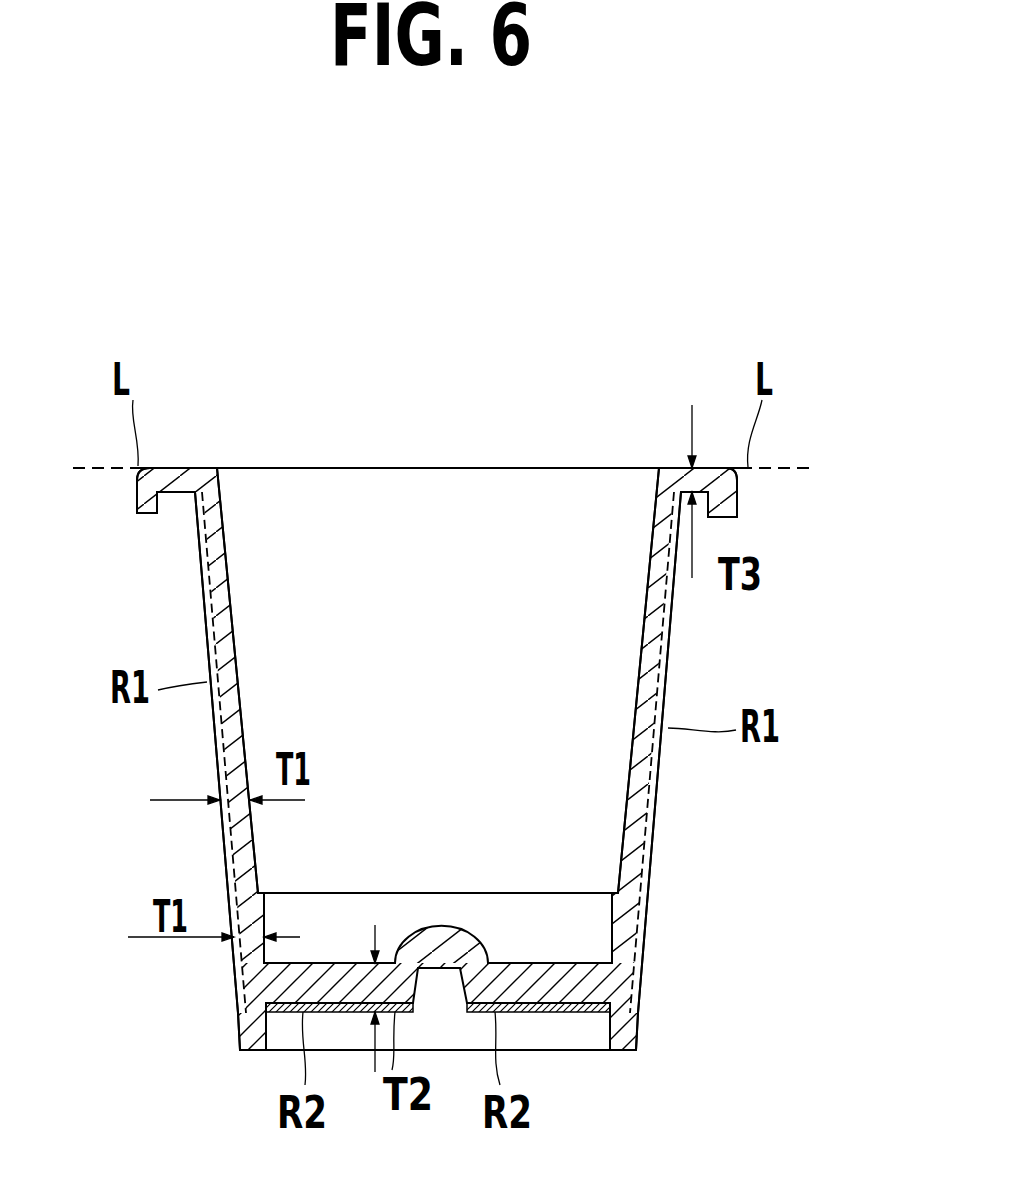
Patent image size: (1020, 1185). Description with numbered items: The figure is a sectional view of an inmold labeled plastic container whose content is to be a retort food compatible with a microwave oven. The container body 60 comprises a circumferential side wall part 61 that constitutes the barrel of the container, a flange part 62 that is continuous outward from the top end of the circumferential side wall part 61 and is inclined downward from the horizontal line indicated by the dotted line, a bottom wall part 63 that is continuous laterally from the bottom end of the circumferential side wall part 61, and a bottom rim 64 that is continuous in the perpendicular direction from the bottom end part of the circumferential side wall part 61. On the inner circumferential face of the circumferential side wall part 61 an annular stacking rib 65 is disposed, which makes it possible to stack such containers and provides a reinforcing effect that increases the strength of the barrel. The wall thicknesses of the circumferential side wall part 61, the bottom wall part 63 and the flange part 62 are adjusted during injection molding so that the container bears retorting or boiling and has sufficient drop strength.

The container body 60 is at (392, 468).
The circumferential side wall part 61 is at (219, 668).
The flange part 62 is at (140, 500).
The bottom wall part 63 is at (543, 1012).
The bottom rim 64 is at (243, 1038).
The annular stacking rib 65 is at (618, 892).